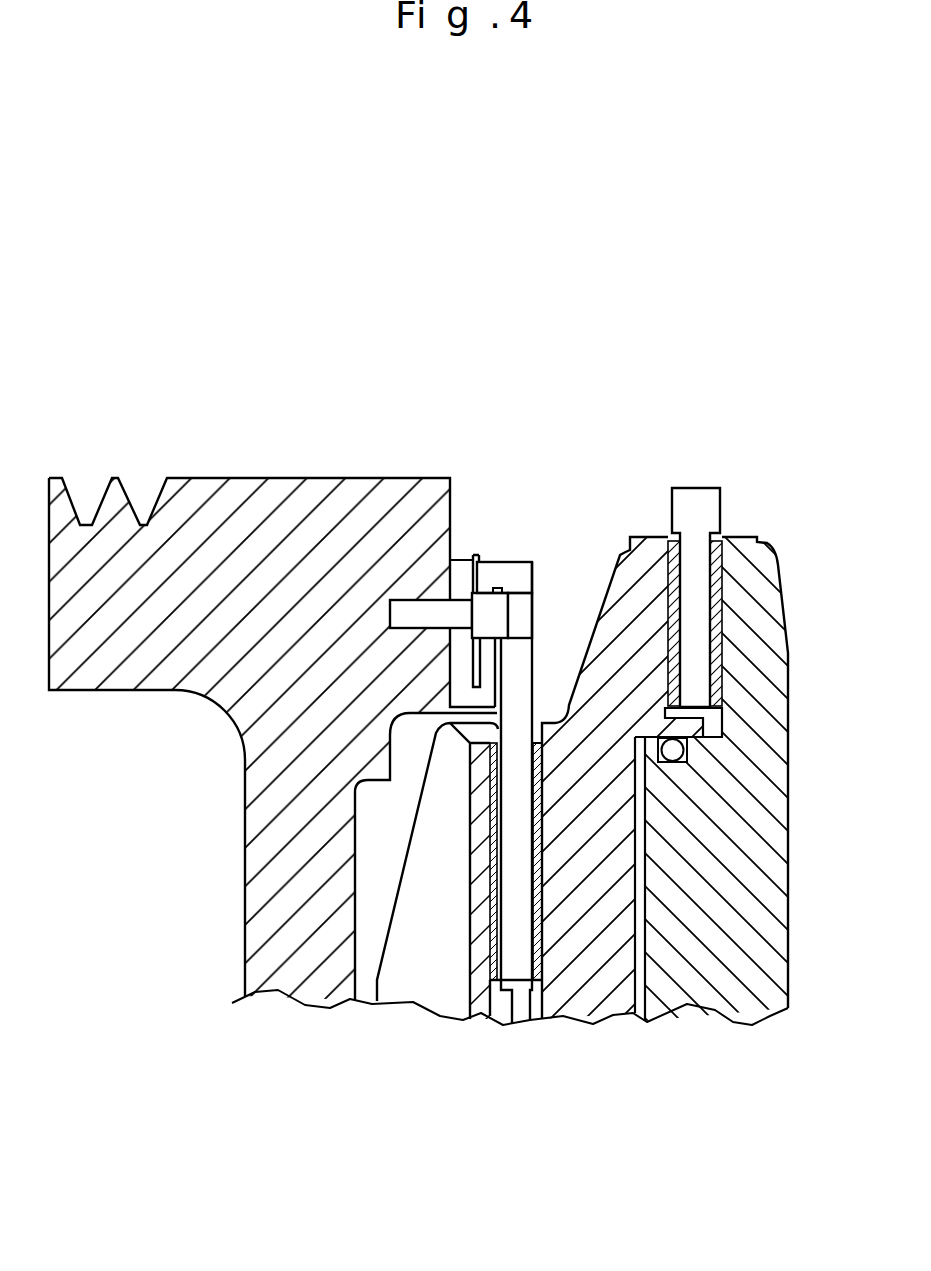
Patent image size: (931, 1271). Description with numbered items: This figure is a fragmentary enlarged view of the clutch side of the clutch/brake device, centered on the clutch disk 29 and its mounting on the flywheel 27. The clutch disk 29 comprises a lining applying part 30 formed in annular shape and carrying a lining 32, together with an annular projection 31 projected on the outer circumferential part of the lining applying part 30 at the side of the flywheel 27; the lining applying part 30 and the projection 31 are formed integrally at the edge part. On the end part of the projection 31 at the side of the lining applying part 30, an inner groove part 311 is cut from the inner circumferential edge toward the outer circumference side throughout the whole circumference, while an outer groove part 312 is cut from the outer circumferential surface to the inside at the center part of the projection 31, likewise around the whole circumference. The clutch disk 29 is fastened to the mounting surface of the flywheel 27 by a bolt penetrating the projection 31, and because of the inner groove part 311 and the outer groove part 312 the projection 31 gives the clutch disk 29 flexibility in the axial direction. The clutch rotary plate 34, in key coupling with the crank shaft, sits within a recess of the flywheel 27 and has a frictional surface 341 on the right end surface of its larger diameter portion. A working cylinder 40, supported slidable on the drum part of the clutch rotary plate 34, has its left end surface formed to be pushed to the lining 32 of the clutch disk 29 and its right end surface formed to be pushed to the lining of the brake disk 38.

The flywheel 27 is at (292, 503).
The clutch disk 29 is at (550, 644).
The lining applying part 30 is at (523, 665).
The projection 31 is at (505, 532).
The inner groove part 311 is at (470, 712).
The outer groove part 312 is at (474, 558).
The lining 32 is at (537, 790).
The clutch rotary plate 34 is at (413, 968).
The frictional surface 341 is at (512, 997).
The brake disk 38 is at (702, 503).
The working cylinder 40 is at (635, 647).